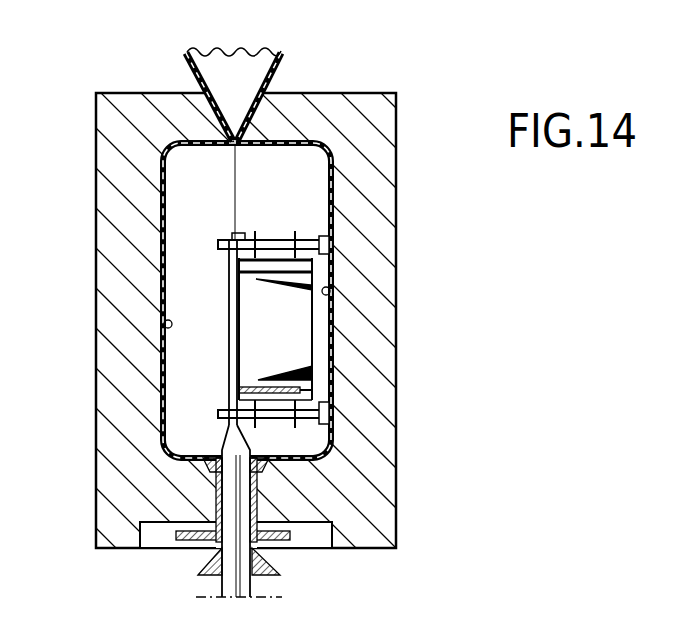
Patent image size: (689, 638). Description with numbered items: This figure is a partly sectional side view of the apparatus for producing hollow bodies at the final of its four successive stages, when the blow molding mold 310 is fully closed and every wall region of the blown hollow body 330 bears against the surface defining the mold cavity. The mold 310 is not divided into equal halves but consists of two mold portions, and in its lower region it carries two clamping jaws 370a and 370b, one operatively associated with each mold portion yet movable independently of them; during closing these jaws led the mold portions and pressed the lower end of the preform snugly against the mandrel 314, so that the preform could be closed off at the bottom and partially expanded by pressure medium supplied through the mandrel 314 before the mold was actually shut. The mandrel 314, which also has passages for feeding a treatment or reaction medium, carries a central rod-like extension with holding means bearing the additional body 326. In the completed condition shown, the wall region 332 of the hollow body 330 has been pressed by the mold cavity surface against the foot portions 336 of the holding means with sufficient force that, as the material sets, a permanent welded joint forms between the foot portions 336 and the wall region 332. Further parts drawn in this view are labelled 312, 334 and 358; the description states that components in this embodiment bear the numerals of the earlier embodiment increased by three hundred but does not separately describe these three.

The blow molding mold 310 is at (404, 101).
The cavity 312 is at (298, 197).
The mandrel 314 is at (243, 587).
The additional body 326 is at (303, 392).
The hollow body 330 is at (171, 198).
The wall region 332 is at (331, 291).
The insert holder 334 is at (313, 323).
The foot portions 336 is at (330, 247).
The cavity wall 358 is at (165, 327).
The clamping jaw 370a is at (190, 549).
The clamping jaw 370b is at (320, 549).